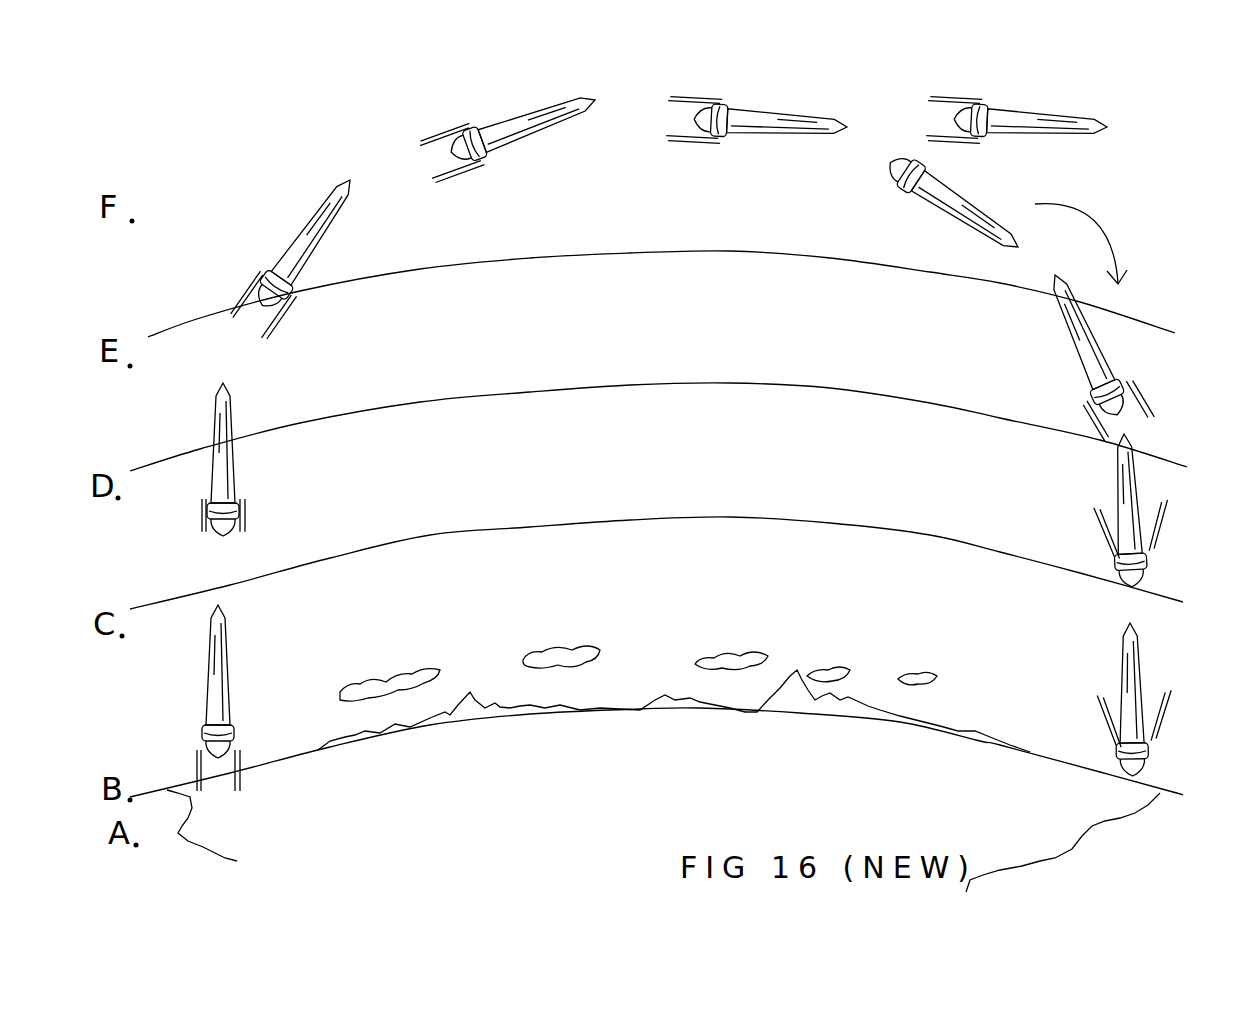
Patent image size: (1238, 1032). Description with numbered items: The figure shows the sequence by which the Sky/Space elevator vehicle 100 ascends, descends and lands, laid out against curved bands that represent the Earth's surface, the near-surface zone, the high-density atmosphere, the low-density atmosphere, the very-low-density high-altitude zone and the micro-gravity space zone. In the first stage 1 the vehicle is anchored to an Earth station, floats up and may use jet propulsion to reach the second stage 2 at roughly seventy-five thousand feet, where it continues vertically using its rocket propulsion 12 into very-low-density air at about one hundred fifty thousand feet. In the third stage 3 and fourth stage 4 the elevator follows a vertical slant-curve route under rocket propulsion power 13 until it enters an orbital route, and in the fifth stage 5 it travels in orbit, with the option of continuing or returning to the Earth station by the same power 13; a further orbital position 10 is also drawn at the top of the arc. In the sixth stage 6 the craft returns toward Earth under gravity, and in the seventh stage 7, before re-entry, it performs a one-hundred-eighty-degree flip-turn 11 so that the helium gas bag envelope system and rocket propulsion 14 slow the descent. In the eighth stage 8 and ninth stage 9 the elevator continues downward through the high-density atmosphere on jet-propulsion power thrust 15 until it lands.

The Sky/Space elevator vehicle 100 is at (639, 404).
The first stage 1 is at (241, 681).
The second stage 2 is at (244, 459).
The third stage 3 is at (309, 243).
The fourth stage 4 is at (523, 131).
The fifth stage 5 is at (770, 141).
The sixth stage 6 is at (954, 204).
The seventh stage 7 is at (1035, 344).
The eighth stage 8 is at (1058, 510).
The ninth stage 9 is at (1063, 700).
The horizontal flight position before turn 10 is at (1030, 141).
The 180 degree flip-turn 11 is at (1087, 244).
The rocket propulsion 12 is at (222, 650).
The rocket propulsion power 13 is at (598, 220).
The rocket propulsion 14 is at (1129, 410).
The jet-propulsion power thrust 15 is at (1156, 624).